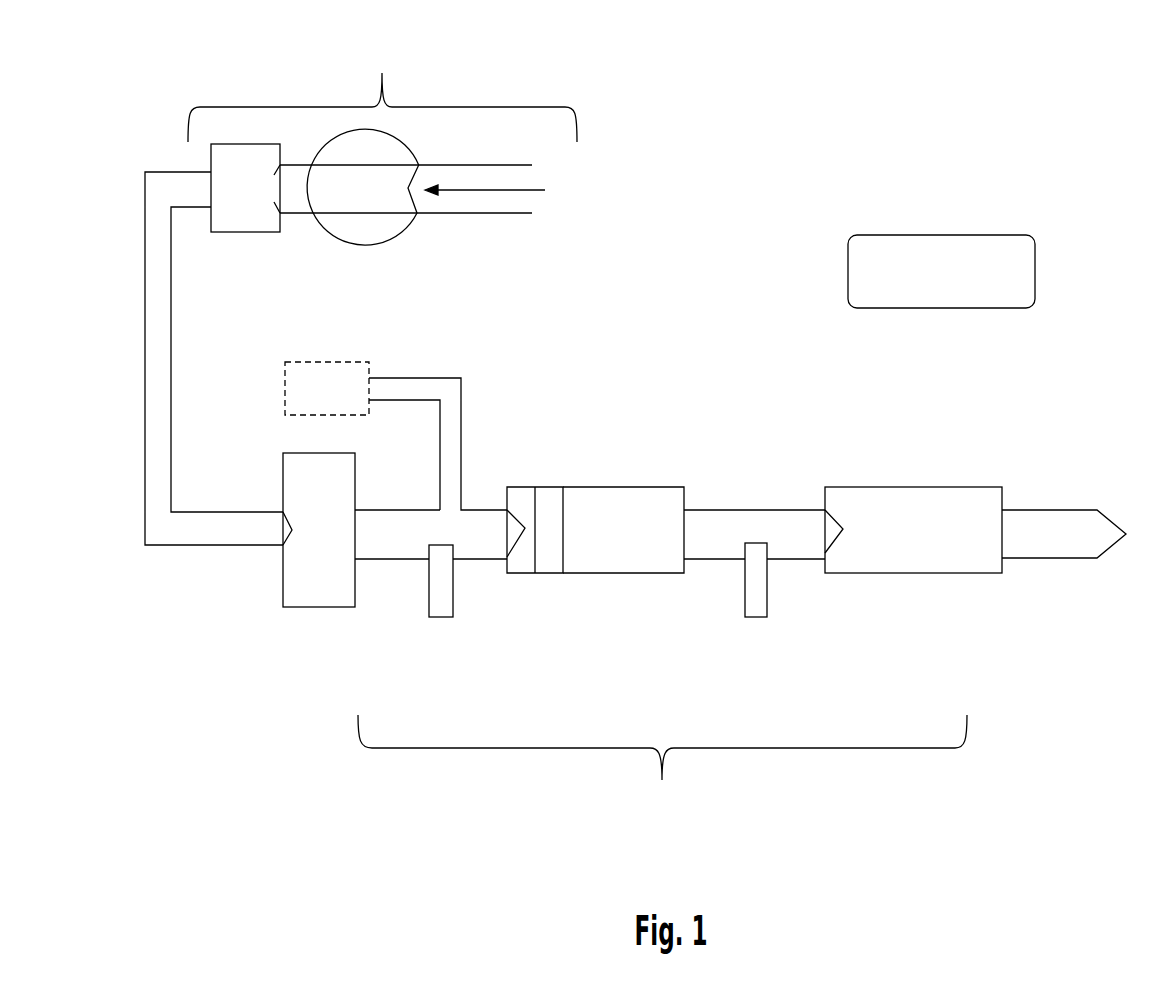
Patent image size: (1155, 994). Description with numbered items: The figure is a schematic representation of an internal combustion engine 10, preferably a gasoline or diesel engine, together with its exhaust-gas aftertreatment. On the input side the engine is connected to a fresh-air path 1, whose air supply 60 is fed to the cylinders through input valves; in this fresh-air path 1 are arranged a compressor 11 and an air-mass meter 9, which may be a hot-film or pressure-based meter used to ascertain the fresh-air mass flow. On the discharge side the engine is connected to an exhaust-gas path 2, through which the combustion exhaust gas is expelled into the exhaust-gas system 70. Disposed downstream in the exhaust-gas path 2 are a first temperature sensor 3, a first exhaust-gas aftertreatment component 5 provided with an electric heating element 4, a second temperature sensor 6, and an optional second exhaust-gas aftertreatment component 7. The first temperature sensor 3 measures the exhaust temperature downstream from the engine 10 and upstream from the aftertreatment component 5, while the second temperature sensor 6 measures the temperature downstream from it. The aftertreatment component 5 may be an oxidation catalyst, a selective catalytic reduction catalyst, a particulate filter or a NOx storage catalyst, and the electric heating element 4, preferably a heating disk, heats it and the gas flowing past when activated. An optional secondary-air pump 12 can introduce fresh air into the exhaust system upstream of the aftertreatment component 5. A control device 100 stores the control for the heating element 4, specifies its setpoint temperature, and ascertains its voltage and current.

The fresh-air path 1 is at (477, 200).
The exhaust-gas path 2 is at (373, 535).
The first temperature sensor 3 is at (441, 612).
The electric heating element 4 is at (551, 505).
The first exhaust-gas aftertreatment component 5 is at (620, 508).
The second temperature sensor 6 is at (752, 605).
The second exhaust-gas aftertreatment component 7 is at (916, 508).
The air-mass meter 9 is at (247, 233).
The internal combustion engine 10 is at (315, 608).
The compressor 11 is at (375, 226).
The secondary-air pump 12 is at (285, 383).
The air supply 60 is at (382, 85).
The exhaust-gas system 70 is at (662, 768).
The control device 100 is at (932, 247).